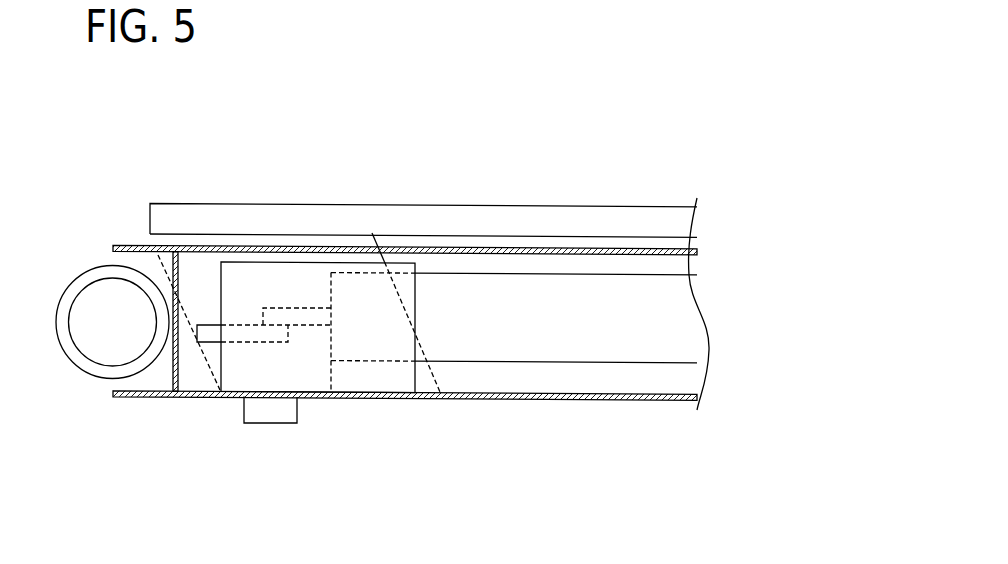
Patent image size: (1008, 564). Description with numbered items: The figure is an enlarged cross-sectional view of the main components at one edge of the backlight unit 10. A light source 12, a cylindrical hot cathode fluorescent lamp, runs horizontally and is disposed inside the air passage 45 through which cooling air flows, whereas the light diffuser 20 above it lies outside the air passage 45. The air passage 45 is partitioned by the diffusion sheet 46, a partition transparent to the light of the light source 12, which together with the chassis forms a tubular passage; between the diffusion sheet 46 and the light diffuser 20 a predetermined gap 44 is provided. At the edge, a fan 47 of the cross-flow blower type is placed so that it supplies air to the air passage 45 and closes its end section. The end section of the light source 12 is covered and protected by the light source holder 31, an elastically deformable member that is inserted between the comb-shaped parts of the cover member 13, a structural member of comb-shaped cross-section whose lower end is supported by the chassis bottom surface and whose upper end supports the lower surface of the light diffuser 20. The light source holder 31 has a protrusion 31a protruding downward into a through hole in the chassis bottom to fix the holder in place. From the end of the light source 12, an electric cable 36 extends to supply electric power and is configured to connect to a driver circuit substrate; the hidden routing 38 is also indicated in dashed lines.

The backlight unit 10 is at (155, 142).
The light source 12 is at (592, 348).
The cover member 13 is at (434, 378).
The light diffuser 20 is at (562, 215).
The light source holder 31 is at (362, 382).
The protrusion 31a is at (259, 413).
The electric cable 36 is at (248, 325).
The wiring 38 is at (305, 313).
The gap 44 is at (437, 242).
The air passage 45 is at (630, 263).
The diffusion sheet 46 is at (505, 250).
The fan 47 is at (89, 268).